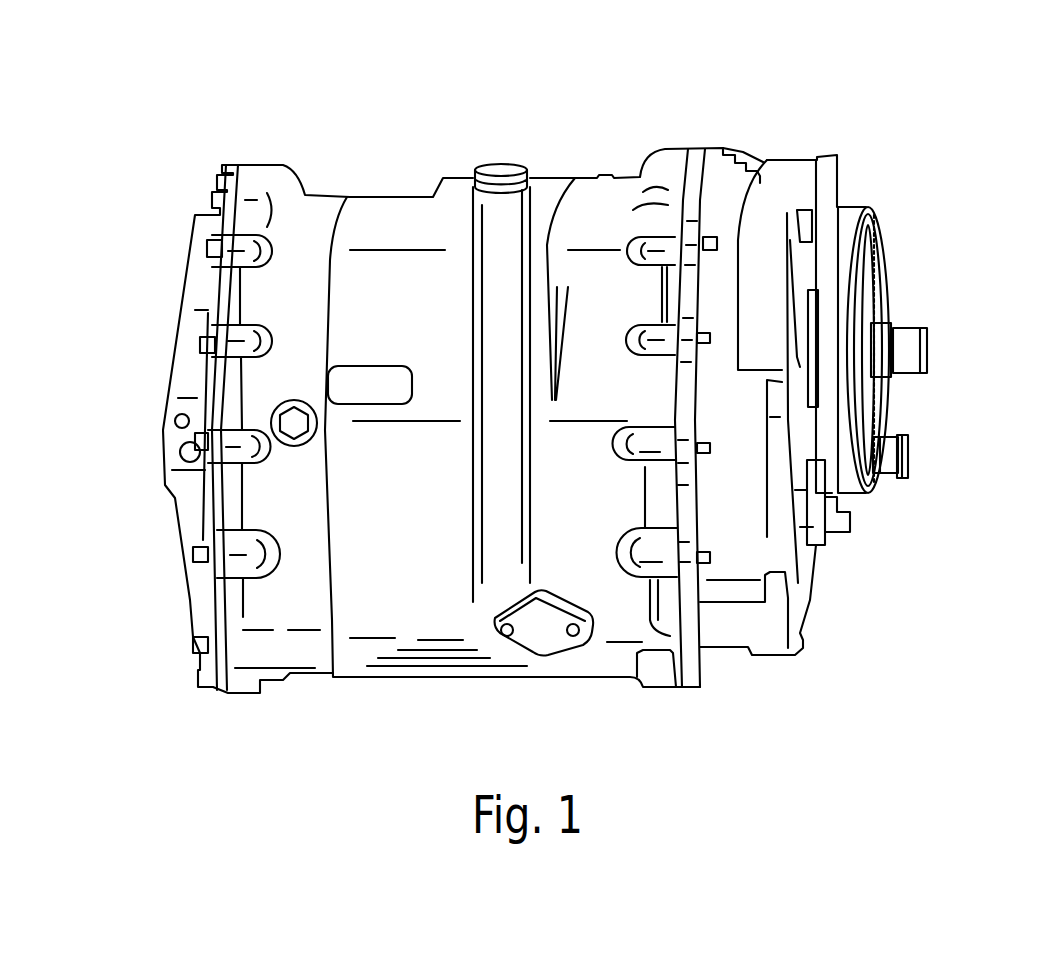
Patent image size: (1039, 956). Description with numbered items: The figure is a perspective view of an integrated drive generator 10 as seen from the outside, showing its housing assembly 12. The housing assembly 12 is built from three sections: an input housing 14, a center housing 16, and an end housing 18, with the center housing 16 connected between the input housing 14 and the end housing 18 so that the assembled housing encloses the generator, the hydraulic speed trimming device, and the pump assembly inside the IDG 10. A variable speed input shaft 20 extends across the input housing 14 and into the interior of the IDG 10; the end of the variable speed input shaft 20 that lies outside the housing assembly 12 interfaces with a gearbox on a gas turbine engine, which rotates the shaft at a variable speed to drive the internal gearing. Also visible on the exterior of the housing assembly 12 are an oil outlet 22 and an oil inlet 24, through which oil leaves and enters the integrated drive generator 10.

The integrated drive generator 10 is at (131, 130).
The housing assembly 12 is at (413, 133).
The input housing 14 is at (793, 170).
The center housing 16 is at (543, 197).
The end housing 18 is at (197, 370).
The variable speed input shaft 20 is at (912, 340).
The oil outlet 22 is at (887, 447).
The oil inlet 24 is at (912, 445).